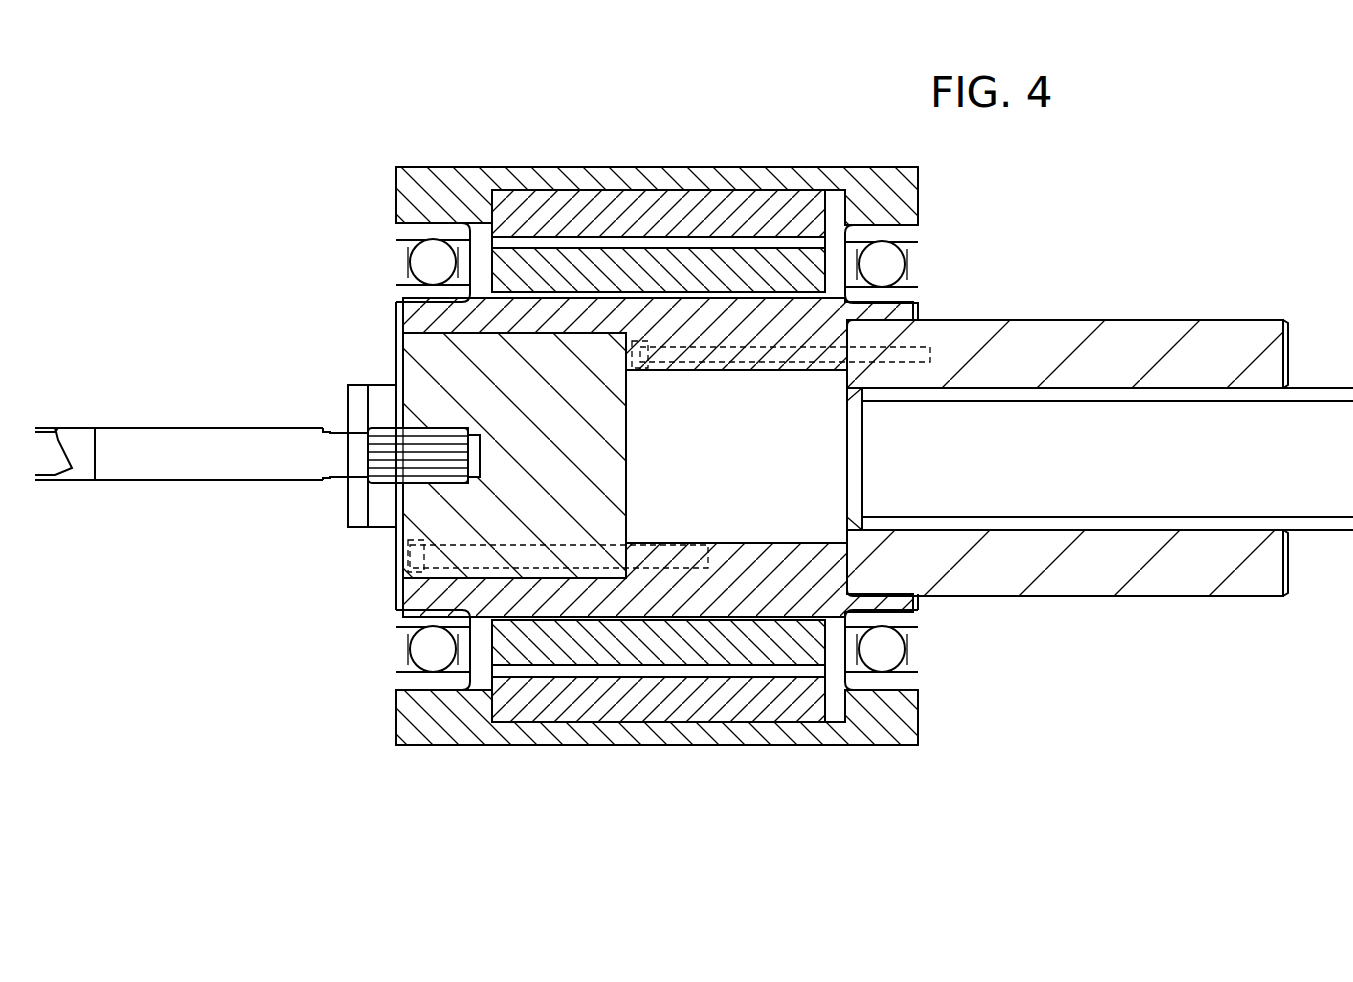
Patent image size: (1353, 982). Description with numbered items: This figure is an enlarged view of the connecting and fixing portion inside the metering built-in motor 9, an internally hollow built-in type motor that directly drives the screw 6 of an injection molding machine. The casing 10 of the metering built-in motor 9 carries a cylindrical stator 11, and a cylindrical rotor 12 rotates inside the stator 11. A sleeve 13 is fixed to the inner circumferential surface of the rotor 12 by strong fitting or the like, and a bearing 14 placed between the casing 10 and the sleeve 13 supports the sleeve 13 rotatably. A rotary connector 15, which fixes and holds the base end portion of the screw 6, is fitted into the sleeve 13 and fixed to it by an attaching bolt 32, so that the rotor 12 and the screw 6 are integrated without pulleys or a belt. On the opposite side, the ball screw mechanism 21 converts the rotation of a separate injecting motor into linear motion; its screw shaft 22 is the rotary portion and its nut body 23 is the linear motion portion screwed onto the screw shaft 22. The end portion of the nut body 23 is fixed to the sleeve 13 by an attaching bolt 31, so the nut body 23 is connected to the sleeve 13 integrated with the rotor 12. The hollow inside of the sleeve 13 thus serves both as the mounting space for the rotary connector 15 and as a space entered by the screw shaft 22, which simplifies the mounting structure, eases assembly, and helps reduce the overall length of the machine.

The screw 6 is at (215, 470).
The metering built-in motor 9 is at (651, 378).
The casing 10 is at (508, 178).
The stator 11 is at (620, 205).
The rotor 12 is at (478, 93).
The sleeve 13 is at (425, 318).
The bearing 14 is at (396, 233).
The rotary connector 15 is at (432, 360).
The ball screw mechanism 21 is at (1100, 519).
The screw shaft 22 is at (1203, 503).
The nut body 23 is at (1080, 570).
The attaching bolt 31 is at (930, 355).
The attaching bolt 32 is at (473, 545).